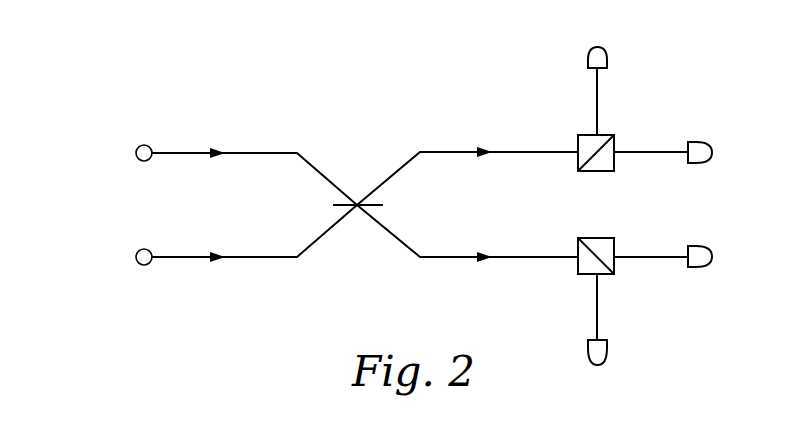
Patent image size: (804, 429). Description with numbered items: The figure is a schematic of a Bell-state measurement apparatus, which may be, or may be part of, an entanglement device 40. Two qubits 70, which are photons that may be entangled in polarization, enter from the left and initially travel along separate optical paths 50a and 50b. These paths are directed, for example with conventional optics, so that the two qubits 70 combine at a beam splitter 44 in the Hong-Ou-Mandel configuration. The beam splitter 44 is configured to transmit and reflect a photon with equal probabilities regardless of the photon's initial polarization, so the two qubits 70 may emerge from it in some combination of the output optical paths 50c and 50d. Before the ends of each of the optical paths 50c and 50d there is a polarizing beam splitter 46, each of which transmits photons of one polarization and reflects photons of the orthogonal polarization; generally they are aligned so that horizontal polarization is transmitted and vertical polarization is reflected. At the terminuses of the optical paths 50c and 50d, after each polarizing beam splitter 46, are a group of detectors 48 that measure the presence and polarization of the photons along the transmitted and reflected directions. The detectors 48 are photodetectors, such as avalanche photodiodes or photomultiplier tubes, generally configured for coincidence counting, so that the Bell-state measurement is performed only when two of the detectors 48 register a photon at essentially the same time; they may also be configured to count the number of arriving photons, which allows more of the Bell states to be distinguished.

The entanglement device 40 is at (160, 66).
The qubits 70 is at (138, 146).
The optical path 50a is at (272, 151).
The optical path 50b is at (255, 258).
The optical path 50c is at (437, 151).
The optical path 50d is at (467, 254).
The beam splitter 44 is at (345, 204).
The polarizing beam splitter 46 is at (591, 135).
The detectors 48 is at (588, 59).